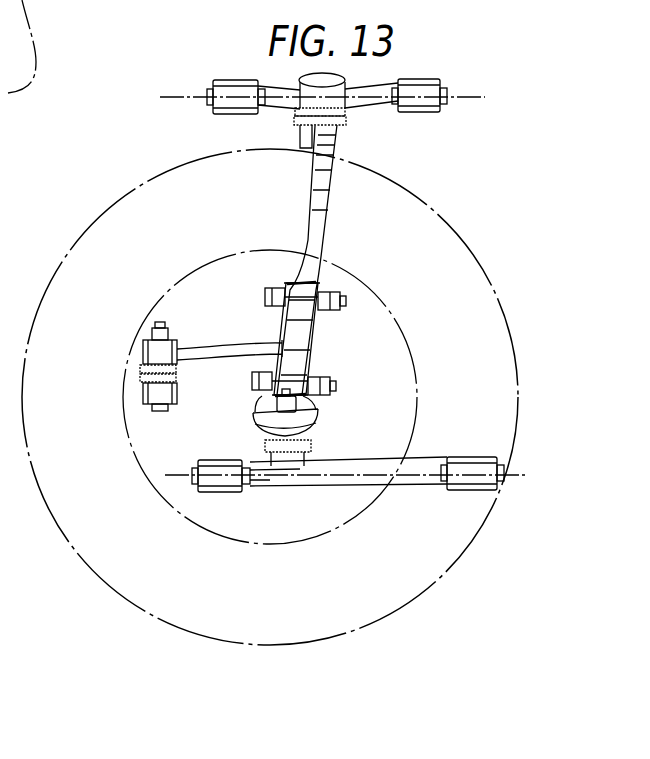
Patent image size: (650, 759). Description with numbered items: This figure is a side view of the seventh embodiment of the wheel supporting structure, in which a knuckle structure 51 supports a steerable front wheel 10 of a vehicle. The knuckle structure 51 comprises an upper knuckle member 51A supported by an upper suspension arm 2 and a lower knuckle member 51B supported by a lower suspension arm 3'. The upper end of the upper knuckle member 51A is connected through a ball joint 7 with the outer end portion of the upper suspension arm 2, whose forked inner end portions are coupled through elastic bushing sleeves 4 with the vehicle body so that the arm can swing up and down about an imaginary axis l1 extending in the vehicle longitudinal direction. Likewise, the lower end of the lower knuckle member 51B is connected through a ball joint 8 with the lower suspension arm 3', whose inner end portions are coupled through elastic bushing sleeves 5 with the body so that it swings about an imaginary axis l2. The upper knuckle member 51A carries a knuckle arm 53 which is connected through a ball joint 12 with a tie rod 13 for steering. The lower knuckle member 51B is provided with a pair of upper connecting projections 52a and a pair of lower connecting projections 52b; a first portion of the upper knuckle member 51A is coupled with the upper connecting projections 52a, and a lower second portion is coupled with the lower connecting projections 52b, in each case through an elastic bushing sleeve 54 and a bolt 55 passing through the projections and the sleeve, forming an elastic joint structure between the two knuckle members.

The upper suspension arm 2 is at (373, 104).
The lower suspension arm 3' is at (348, 491).
The elastic bushing sleeve 4 is at (222, 107).
The elastic bushing sleeve 5 is at (203, 488).
The ball joint 7 is at (346, 121).
The ball joint 8 is at (314, 449).
The steerable front wheel 10 is at (455, 223).
The ball joint 12 is at (143, 362).
The tie rod 13 is at (168, 398).
The knuckle structure 51 is at (378, 330).
The upper knuckle member 51A is at (298, 330).
The lower knuckle member 51B is at (312, 352).
The upper connecting projections 52a is at (268, 290).
The lower connecting projections 52b is at (256, 384).
The knuckle arm 53 is at (220, 348).
The elastic bushing sleeve 54 is at (328, 295).
The bolt 55 is at (346, 301).
The imaginary axis l1 is at (470, 103).
The imaginary axis l2 is at (516, 470).